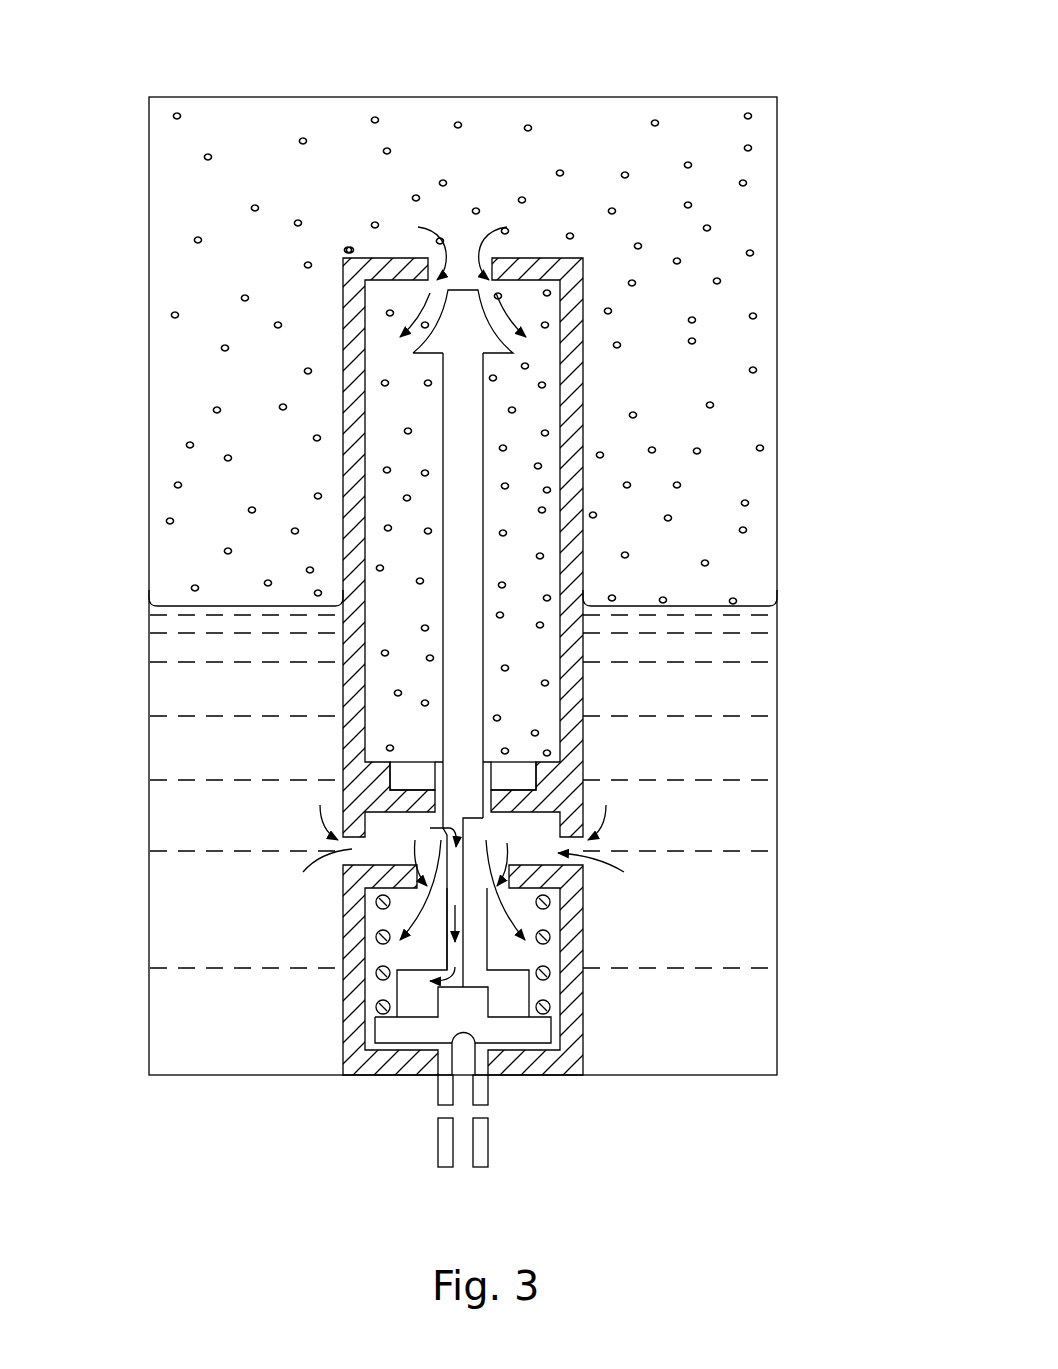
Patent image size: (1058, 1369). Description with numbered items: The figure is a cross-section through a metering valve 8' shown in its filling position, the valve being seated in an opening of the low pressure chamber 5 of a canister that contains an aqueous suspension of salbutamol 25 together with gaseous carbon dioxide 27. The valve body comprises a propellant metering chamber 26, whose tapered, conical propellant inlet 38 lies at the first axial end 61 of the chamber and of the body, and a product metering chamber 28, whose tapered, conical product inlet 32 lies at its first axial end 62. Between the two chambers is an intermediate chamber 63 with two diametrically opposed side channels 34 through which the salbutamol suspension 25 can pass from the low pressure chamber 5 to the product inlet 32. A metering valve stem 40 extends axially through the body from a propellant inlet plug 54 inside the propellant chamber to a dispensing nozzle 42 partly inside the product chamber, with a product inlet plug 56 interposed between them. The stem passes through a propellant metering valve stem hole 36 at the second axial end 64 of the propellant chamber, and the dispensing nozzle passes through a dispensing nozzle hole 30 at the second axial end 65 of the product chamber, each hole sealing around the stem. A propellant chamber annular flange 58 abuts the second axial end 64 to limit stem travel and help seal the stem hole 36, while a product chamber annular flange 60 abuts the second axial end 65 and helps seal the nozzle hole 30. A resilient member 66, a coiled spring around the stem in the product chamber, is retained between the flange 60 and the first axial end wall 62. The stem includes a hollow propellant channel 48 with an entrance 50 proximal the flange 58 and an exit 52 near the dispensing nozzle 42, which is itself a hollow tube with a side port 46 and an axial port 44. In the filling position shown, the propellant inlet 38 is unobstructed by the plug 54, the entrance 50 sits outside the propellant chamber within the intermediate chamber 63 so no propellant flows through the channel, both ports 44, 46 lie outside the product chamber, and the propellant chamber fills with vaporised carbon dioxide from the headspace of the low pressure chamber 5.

The low pressure chamber 5 is at (130, 505).
The metering valve 8' is at (721, 359).
The aqueous suspension of salbutamol 25 is at (270, 917).
The propellant metering chamber 26 is at (517, 485).
The gaseous carbon dioxide 27 is at (286, 472).
The product metering chamber 28 is at (552, 902).
The dispensing nozzle hole 30 is at (428, 1078).
The product inlet 32 is at (410, 902).
The side channels 34 is at (368, 853).
The propellant metering valve stem hole 36 is at (395, 772).
The propellant inlet 38 is at (457, 256).
The metering valve stem 40 is at (465, 578).
The dispensing nozzle 42 is at (482, 1135).
The axial port 44 is at (467, 1160).
The side port 46 is at (443, 1110).
The propellant channel 48 is at (482, 850).
The entrance 50 is at (457, 827).
The exit 52 is at (487, 1023).
The propellant inlet plug 54 is at (467, 323).
The product inlet plug 56 is at (418, 958).
The propellant chamber annular flange 58 is at (440, 800).
The product chamber annular flange 60 is at (490, 1030).
The first axial end 61 is at (525, 272).
The first axial end 62 is at (595, 856).
The intermediate chamber 63 is at (370, 814).
The second axial end 64 is at (515, 780).
The second axial end 65 is at (358, 1060).
The resilient member 66 is at (548, 937).